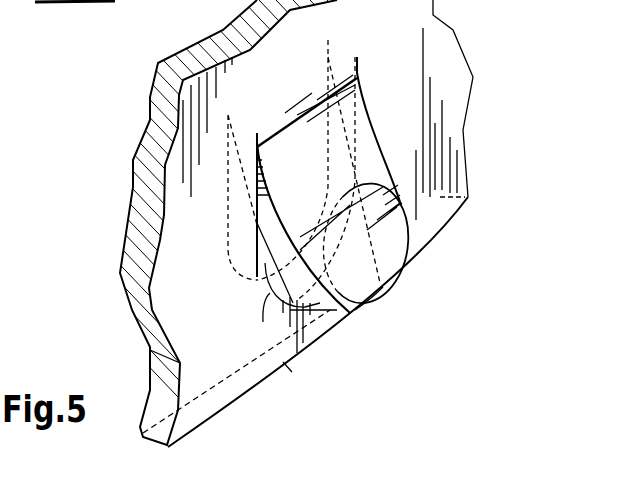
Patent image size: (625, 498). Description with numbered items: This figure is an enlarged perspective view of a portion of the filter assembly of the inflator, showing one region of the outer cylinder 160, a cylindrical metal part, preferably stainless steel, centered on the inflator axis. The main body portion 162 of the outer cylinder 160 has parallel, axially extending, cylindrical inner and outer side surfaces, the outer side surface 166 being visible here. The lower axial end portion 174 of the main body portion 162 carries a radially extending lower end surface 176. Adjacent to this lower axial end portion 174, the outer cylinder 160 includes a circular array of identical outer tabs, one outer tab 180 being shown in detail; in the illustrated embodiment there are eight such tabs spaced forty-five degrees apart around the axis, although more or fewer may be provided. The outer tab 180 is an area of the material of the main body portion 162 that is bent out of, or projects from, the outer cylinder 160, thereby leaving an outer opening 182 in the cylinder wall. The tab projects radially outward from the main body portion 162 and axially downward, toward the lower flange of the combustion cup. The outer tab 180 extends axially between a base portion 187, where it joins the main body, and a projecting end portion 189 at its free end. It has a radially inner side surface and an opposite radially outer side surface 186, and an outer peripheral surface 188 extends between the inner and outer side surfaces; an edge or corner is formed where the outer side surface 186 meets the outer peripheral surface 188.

The outer cylinder 160 is at (98, 262).
The main body portion 162 is at (198, 367).
The outer side surface 166 is at (183, 177).
The lower axial end portion 174 is at (152, 372).
The lower end surface 176 is at (285, 365).
The outer tab 180 is at (232, 298).
The outer opening 182 is at (268, 300).
The radially outer side surface 186 is at (340, 190).
The base portion 187 is at (318, 122).
The outer peripheral surface 188 is at (309, 306).
The projecting end portion 189 is at (383, 287).